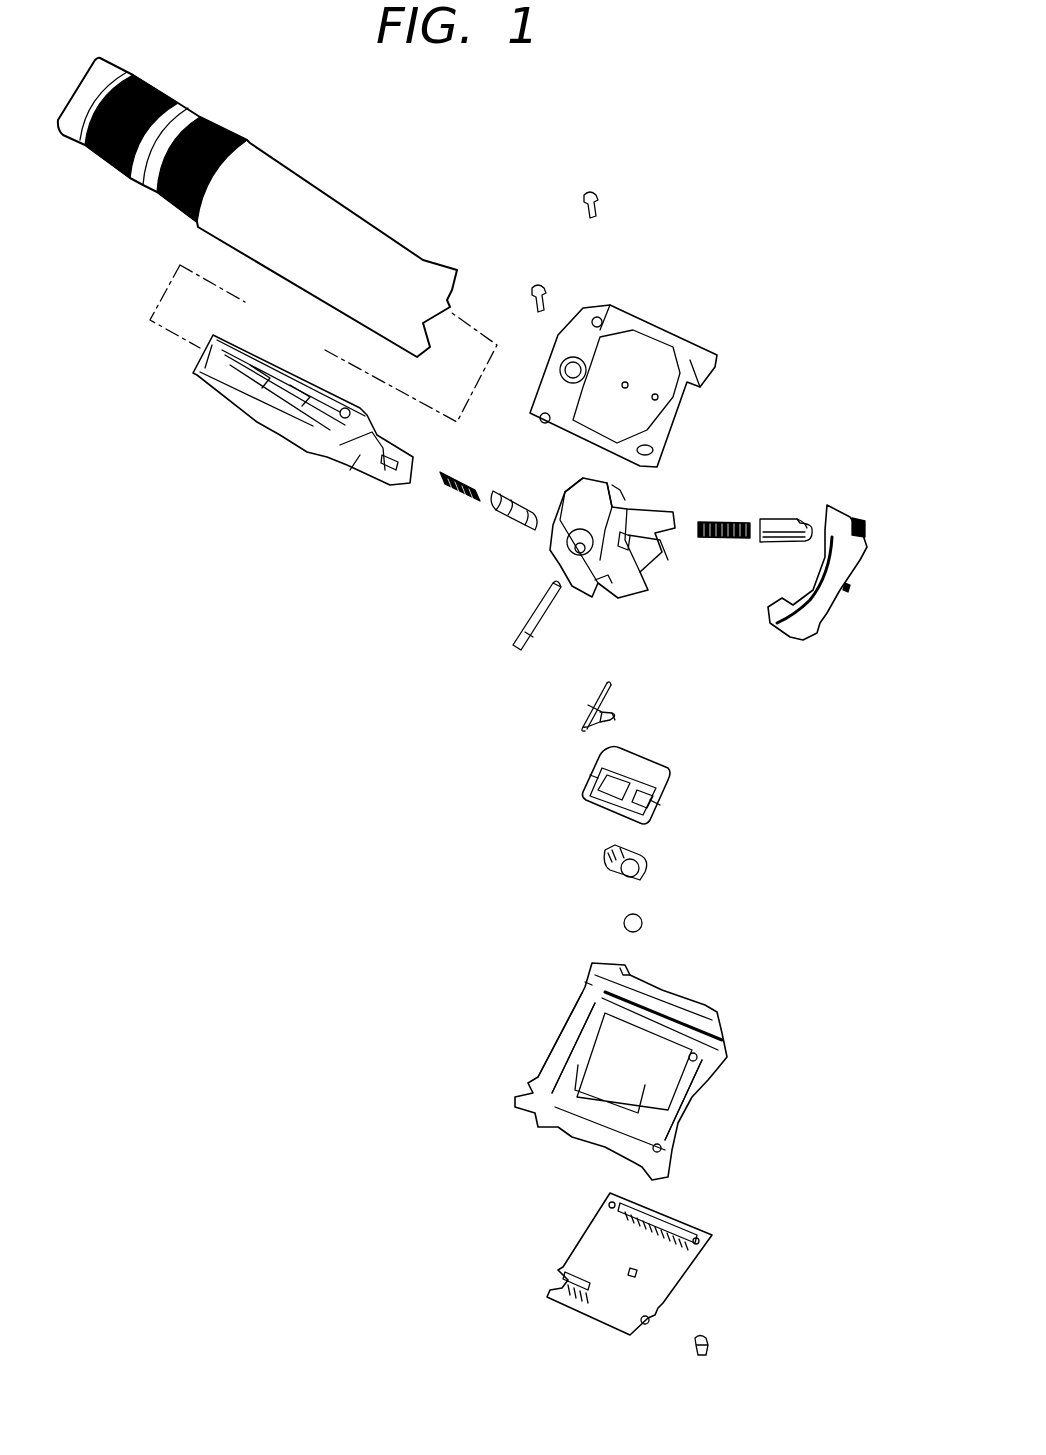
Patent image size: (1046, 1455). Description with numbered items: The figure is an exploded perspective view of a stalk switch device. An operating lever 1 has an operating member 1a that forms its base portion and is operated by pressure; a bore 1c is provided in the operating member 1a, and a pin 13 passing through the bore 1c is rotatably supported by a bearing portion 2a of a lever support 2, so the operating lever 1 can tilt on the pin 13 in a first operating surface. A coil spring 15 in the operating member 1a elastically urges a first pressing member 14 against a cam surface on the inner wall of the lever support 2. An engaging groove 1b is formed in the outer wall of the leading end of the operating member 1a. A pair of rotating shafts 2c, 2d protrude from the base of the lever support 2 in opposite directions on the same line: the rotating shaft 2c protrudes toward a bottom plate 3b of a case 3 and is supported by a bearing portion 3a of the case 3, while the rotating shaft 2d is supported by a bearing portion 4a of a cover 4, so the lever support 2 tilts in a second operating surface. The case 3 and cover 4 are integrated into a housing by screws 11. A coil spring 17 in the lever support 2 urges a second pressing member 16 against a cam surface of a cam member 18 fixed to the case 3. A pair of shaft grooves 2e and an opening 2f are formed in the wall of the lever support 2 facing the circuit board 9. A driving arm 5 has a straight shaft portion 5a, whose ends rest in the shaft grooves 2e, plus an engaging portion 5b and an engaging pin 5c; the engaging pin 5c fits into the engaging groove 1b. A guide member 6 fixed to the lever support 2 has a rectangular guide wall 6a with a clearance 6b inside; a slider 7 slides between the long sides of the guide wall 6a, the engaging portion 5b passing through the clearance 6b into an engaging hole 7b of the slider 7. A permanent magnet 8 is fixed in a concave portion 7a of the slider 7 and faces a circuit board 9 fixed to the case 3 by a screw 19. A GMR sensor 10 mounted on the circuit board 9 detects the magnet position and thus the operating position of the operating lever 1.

The operating lever 1 is at (325, 192).
The operating member 1a is at (278, 437).
The engaging groove 1b is at (397, 458).
The bore 1c is at (347, 410).
The lever support 2 is at (690, 487).
The bearing portion 2a is at (620, 490).
The rotating shaft 2c is at (565, 545).
The rotating shaft 2d is at (565, 490).
The shaft grooves 2e is at (660, 548).
The opening 2f is at (598, 583).
The case 3 is at (713, 1010).
The bearing portion 3a is at (570, 1047).
The bottom plate 3b is at (680, 1077).
The cover 4 is at (680, 330).
The bearing portion 4a is at (561, 368).
The driving arm 5 is at (585, 710).
The shaft portion 5a is at (600, 693).
The engaging portion 5b is at (583, 718).
The engaging pin 5c is at (610, 713).
The guide member 6 is at (657, 763).
The guide wall 6a is at (657, 802).
The clearance 6b is at (592, 778).
The slider 7 is at (647, 857).
The concave portion 7a is at (623, 875).
The engaging hole 7b is at (607, 853).
The permanent magnet 8 is at (643, 922).
The circuit board 9 is at (708, 1227).
The GMR sensor 10 is at (637, 1270).
The screws 11 is at (588, 202).
The pin 13 is at (518, 630).
The first pressing member 14 is at (510, 523).
The coil spring 15 is at (458, 497).
The second pressing member 16 is at (782, 518).
The coil spring 17 is at (720, 520).
The cam member 18 is at (817, 617).
The screw 19 is at (703, 1340).